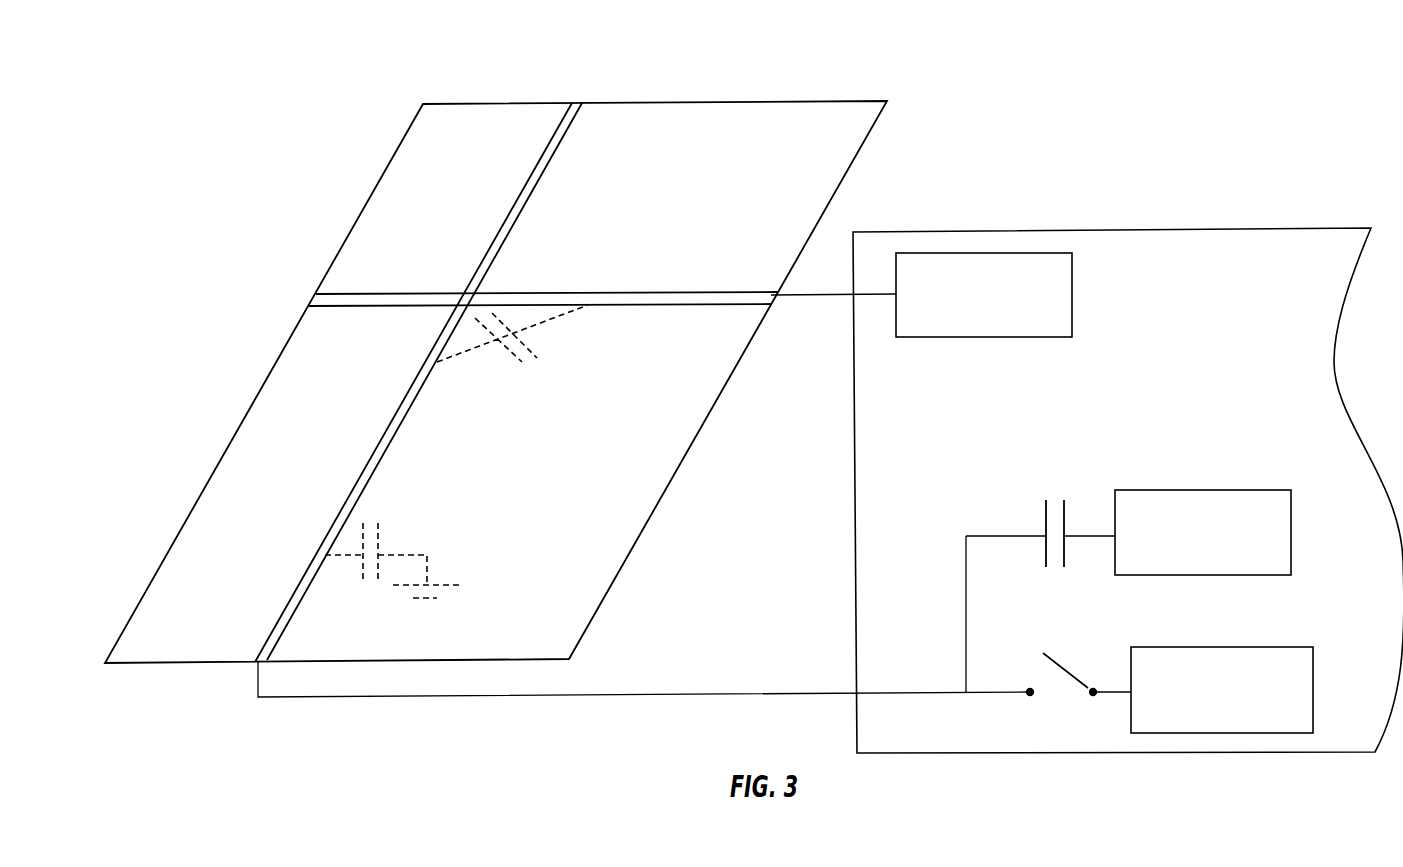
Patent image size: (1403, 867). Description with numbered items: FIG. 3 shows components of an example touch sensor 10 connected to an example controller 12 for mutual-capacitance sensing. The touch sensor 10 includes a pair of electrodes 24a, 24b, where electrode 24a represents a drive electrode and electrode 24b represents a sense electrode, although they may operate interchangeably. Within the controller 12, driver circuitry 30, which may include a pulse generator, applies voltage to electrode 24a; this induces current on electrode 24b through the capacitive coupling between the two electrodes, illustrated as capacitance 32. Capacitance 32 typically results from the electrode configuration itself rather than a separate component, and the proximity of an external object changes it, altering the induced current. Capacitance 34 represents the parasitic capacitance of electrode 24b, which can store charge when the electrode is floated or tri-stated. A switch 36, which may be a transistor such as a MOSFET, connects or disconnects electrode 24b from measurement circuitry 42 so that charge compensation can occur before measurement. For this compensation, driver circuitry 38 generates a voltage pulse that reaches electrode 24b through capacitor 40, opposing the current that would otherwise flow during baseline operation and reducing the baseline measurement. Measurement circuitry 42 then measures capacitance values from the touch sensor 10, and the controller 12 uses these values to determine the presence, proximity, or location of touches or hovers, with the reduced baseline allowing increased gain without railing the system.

The touch sensor 10 is at (811, 75).
The controller 12 is at (1144, 196).
The electrode 24a is at (692, 291).
The electrode 24b is at (545, 170).
The driver circuitry 30 is at (1072, 293).
The capacitance 32 is at (542, 379).
The capacitance 34 is at (414, 538).
The switch 36 is at (1066, 697).
The driver circuitry 38 is at (1203, 490).
The capacitor 40 is at (1043, 482).
The measurement circuitry 42 is at (1224, 647).